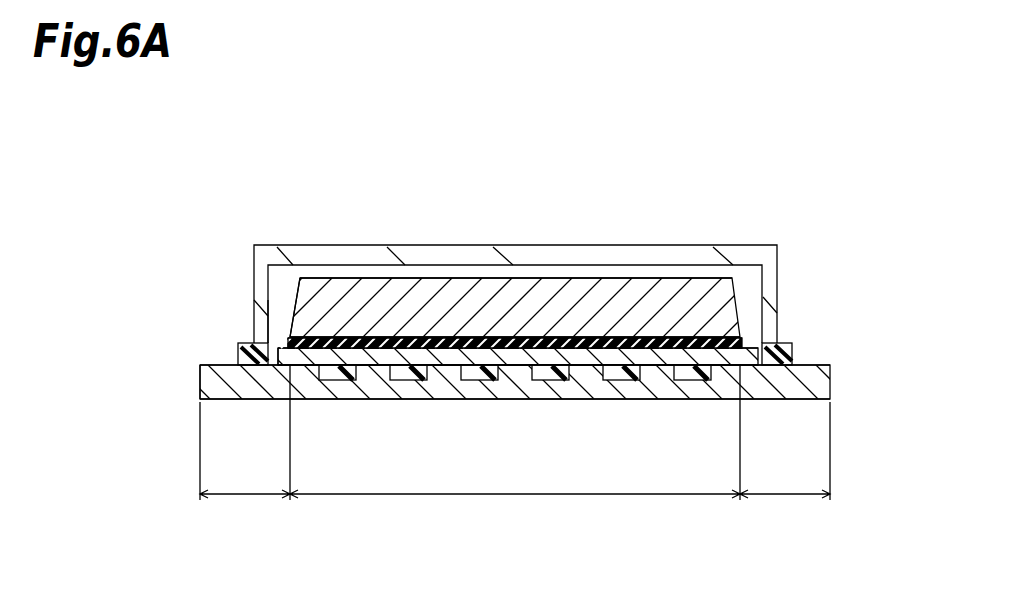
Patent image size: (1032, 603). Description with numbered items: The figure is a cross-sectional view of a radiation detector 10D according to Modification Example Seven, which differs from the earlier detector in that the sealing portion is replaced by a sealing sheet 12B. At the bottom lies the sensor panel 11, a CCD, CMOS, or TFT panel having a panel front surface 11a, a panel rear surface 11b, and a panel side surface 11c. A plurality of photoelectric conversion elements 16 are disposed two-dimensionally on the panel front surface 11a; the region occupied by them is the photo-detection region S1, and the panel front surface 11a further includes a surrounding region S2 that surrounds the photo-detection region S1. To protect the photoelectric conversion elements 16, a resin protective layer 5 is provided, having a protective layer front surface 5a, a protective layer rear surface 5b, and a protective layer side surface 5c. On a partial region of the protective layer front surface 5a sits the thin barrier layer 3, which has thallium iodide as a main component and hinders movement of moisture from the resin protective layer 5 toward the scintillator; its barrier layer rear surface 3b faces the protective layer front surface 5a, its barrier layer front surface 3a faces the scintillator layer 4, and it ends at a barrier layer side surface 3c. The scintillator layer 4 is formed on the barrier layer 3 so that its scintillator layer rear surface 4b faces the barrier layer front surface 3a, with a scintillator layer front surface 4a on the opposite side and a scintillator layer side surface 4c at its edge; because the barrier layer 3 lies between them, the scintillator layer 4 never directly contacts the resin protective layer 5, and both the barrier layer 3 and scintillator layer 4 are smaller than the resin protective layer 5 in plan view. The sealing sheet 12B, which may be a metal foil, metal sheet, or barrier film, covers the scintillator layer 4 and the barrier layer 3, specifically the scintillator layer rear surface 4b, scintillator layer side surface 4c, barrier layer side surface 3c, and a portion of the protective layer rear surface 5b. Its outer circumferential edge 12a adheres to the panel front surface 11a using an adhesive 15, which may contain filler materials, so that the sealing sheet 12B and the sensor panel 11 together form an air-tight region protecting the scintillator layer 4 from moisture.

The radiation detector 10D is at (617, 109).
The sensor panel 11 is at (833, 392).
The panel front surface 11a is at (210, 363).
The panel rear surface 11b is at (707, 400).
The panel side surface 11c is at (200, 387).
The sealing sheet 12B is at (732, 243).
The outer circumferential edge 12a is at (248, 341).
The barrier layer 3 is at (745, 341).
The barrier layer front surface 3a is at (378, 338).
The barrier layer rear surface 3b is at (370, 348).
The barrier layer side surface 3c is at (266, 354).
The scintillator layer 4 is at (743, 302).
The scintillator layer front surface 4a is at (436, 337).
The scintillator layer rear surface 4b is at (496, 277).
The scintillator layer side surface 4c is at (298, 300).
The resin protective layer 5 is at (758, 350).
The protective layer front surface 5a is at (512, 349).
The protective layer rear surface 5b is at (507, 366).
The protective layer side surface 5c is at (273, 367).
The adhesive 15 is at (242, 342).
The photoelectric conversion element 16 is at (620, 380).
The photo-detection region S1 is at (516, 497).
The surrounding region S2 is at (245, 497).